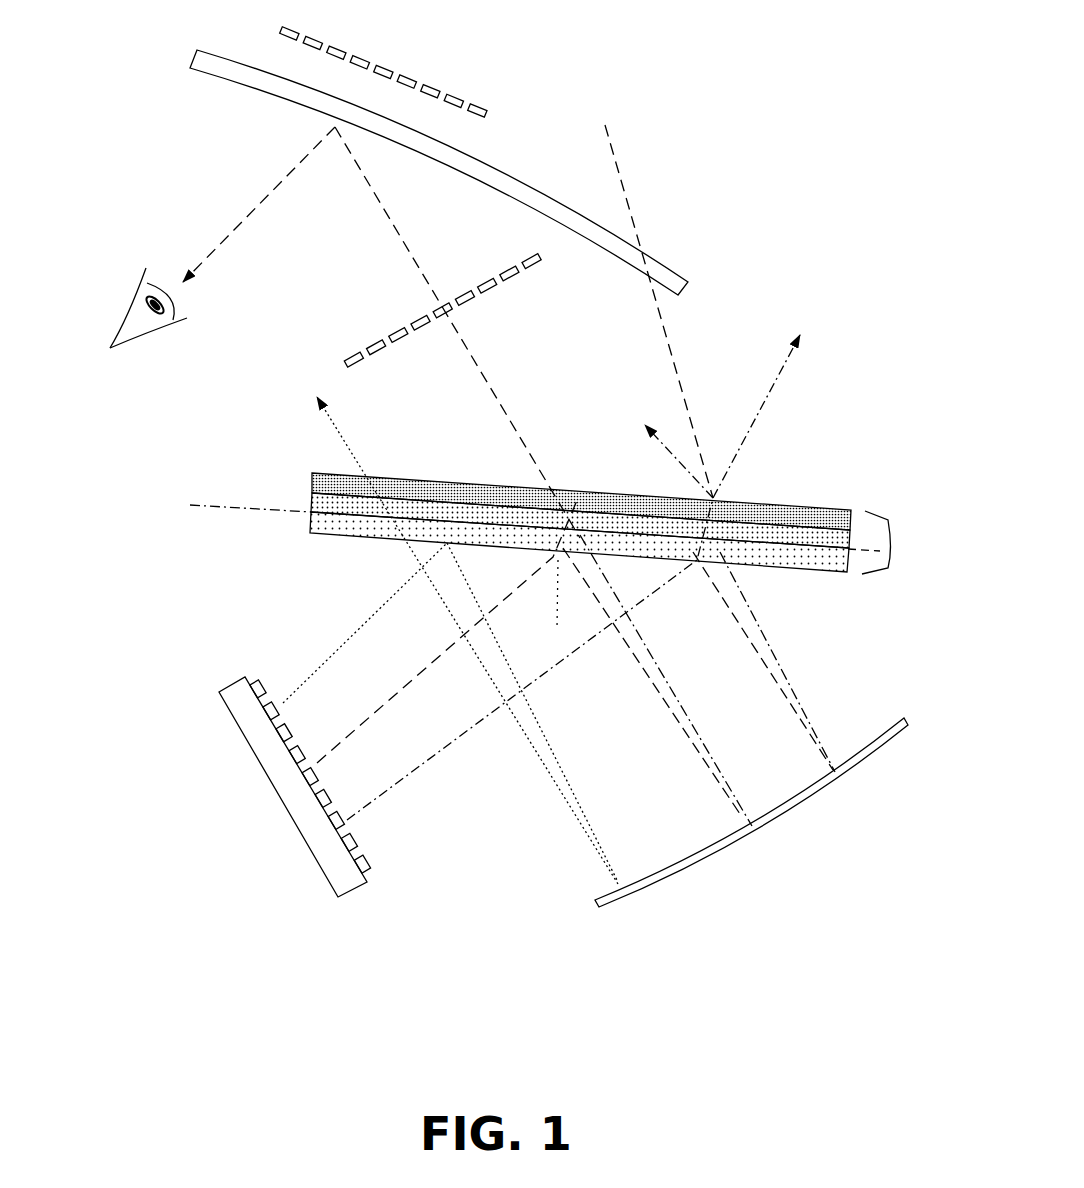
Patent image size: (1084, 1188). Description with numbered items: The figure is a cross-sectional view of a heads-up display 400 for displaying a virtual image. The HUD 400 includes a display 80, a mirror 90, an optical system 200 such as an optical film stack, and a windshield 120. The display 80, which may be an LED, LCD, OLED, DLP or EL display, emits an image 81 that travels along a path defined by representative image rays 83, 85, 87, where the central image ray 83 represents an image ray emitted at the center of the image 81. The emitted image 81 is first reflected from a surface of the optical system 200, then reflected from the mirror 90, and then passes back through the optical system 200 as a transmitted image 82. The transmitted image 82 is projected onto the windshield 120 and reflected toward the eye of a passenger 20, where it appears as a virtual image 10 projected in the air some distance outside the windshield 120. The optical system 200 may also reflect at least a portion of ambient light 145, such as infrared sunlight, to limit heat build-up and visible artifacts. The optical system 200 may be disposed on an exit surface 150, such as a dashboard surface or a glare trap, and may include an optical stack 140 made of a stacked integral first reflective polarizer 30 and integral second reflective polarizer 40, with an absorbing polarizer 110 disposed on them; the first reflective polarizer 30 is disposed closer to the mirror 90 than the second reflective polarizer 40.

The heads-up display 400 is at (130, 126).
The optical system 200 is at (858, 377).
The virtual image 10 is at (488, 113).
The windshield 120 is at (672, 268).
The ambient light 145 is at (628, 208).
The passenger 20 is at (137, 307).
The transmitted image 82 is at (528, 270).
The absorbing polarizer 110 is at (536, 516).
The second reflective polarizer 40 is at (310, 498).
The first reflective polarizer 30 is at (310, 520).
The optical stack 140 is at (893, 549).
The exit surface 150 is at (202, 507).
The display 80 is at (300, 818).
The emitted image 81 is at (257, 676).
The central image ray 83 is at (653, 663).
The image ray 85 is at (548, 737).
The image ray 87 is at (777, 660).
The mirror 90 is at (780, 823).